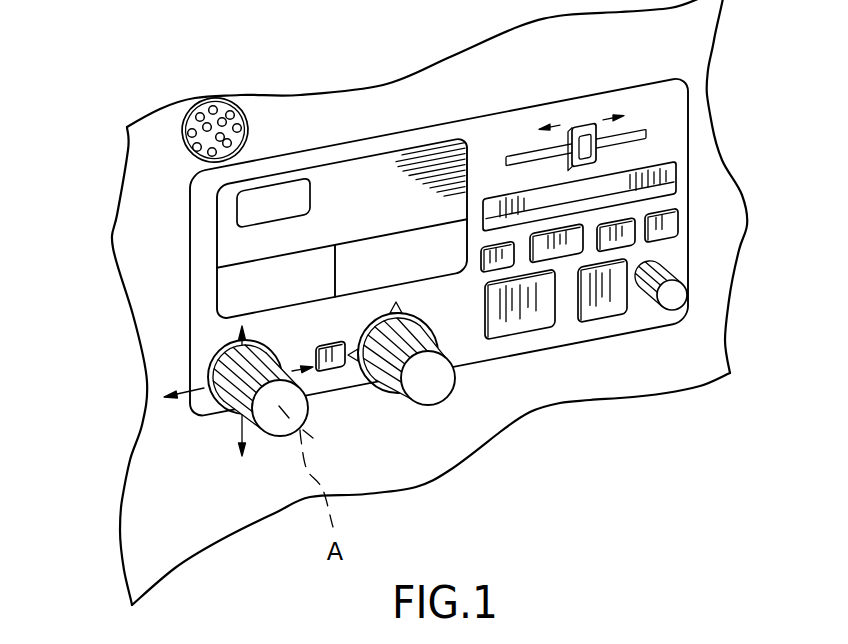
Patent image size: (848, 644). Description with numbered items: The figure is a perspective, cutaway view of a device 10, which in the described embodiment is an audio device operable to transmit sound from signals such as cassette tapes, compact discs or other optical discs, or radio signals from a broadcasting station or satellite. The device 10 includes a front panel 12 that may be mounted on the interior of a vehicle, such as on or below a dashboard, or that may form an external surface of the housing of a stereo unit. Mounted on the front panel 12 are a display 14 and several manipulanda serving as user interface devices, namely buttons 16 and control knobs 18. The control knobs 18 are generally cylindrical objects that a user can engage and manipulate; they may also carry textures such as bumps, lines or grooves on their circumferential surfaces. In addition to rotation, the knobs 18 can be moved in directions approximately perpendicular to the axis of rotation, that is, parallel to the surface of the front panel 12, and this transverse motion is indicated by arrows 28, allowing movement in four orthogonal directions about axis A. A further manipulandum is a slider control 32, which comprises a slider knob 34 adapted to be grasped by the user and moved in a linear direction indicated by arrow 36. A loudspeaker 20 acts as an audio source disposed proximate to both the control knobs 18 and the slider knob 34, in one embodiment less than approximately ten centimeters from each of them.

The device 10 is at (105, 166).
The front panel 12 is at (516, 112).
The display 14 is at (415, 162).
The buttons 16 is at (662, 226).
The control knobs 18 is at (303, 400).
The loudspeaker 20 is at (227, 107).
The arrows 28 is at (241, 334).
The slider control 32 is at (644, 126).
The slider knob 34 is at (597, 164).
The arrow 36 is at (583, 126).